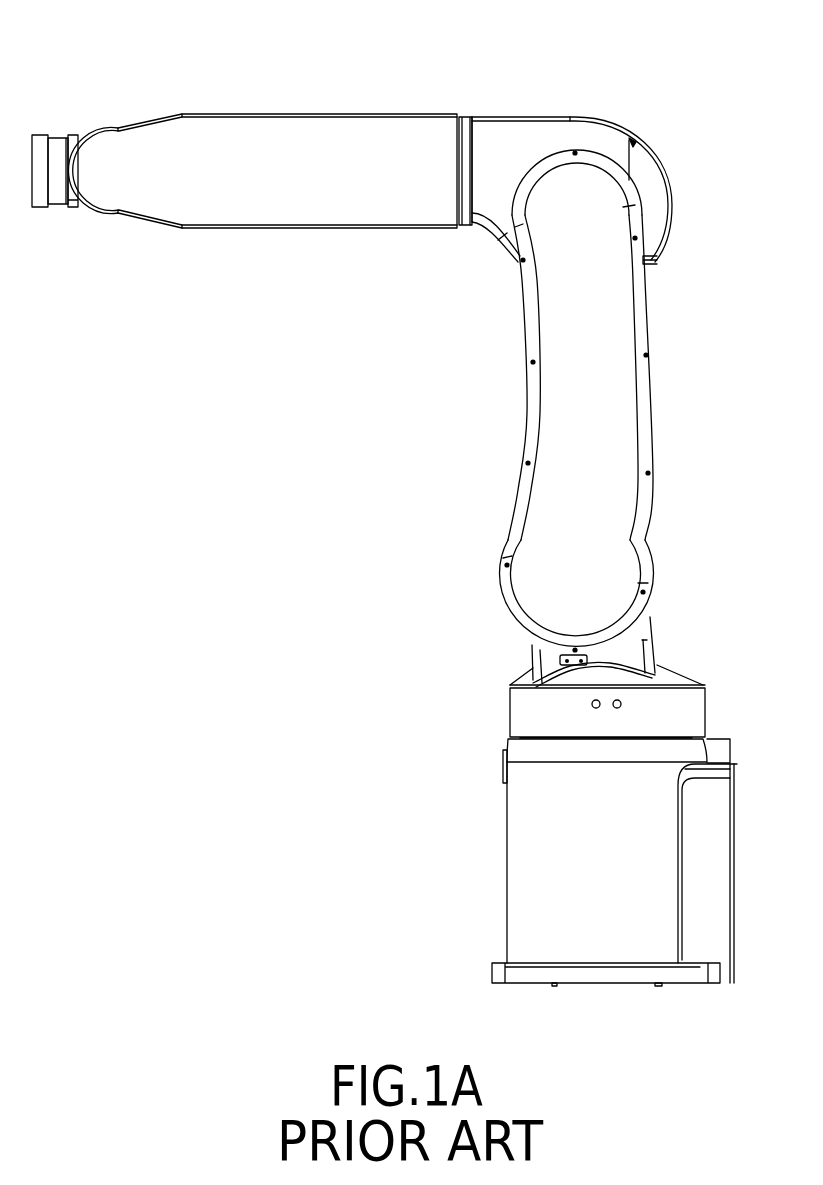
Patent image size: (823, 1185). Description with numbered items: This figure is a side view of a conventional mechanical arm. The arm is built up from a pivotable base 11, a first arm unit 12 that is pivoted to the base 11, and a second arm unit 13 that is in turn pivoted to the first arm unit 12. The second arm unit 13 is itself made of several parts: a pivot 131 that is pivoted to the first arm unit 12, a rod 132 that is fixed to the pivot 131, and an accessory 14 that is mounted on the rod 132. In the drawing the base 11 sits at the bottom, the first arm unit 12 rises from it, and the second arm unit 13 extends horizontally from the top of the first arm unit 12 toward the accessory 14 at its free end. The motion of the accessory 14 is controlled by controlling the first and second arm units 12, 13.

The pivotable base 11 is at (498, 830).
The first arm unit 12 is at (520, 405).
The second arm unit 13 is at (370, 135).
The pivot 131 is at (555, 137).
The rod 132 is at (385, 138).
The accessory 14 is at (67, 130).